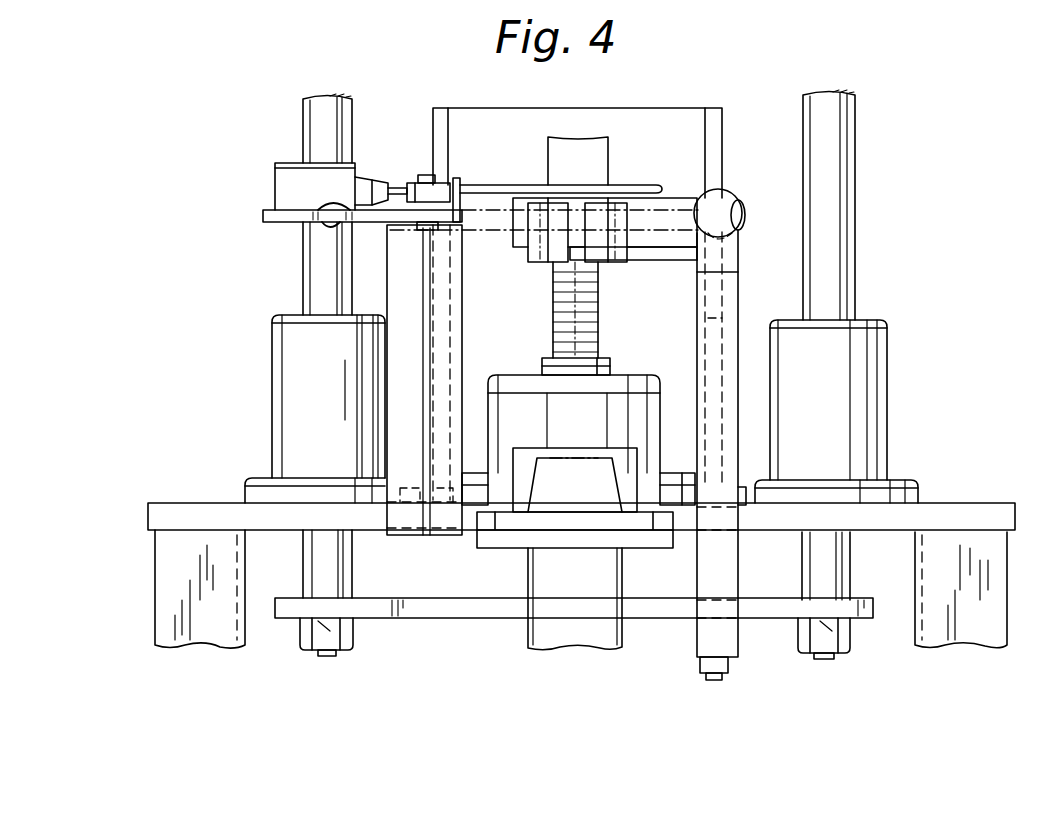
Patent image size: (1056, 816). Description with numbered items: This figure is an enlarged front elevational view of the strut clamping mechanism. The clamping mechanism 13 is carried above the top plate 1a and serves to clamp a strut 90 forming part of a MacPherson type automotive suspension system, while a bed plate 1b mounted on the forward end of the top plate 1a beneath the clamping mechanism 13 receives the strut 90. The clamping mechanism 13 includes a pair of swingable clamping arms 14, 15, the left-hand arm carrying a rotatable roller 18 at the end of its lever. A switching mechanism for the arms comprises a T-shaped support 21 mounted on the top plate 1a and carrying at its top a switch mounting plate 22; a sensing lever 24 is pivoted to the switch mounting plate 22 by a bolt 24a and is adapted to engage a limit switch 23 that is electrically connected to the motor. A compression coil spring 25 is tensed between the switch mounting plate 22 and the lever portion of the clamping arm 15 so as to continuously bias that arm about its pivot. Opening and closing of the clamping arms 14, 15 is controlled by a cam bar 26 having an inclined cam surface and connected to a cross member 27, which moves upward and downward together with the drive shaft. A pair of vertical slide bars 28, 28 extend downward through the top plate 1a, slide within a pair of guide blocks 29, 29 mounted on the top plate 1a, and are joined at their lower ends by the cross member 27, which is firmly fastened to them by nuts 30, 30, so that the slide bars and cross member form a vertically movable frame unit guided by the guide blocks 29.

The top plate 1a is at (970, 508).
The bed plate 1b is at (497, 542).
The clamping mechanism 13 is at (600, 197).
The clamping arm 14 is at (622, 262).
The clamping arm 15 is at (535, 257).
The roller 18 is at (733, 205).
The T-shaped support 21 is at (393, 296).
The switch mounting plate 22 is at (273, 218).
The limit switch 23 is at (283, 178).
The sensing lever 24 is at (498, 190).
The bolt 24a is at (417, 227).
The compression coil spring 25 is at (410, 186).
The cam bar 26 is at (732, 310).
The cross member 27 is at (668, 620).
The slide bar 28 is at (315, 123).
The guide block 29 is at (283, 400).
The nut 30 is at (350, 640).
The strut 90 is at (607, 338).